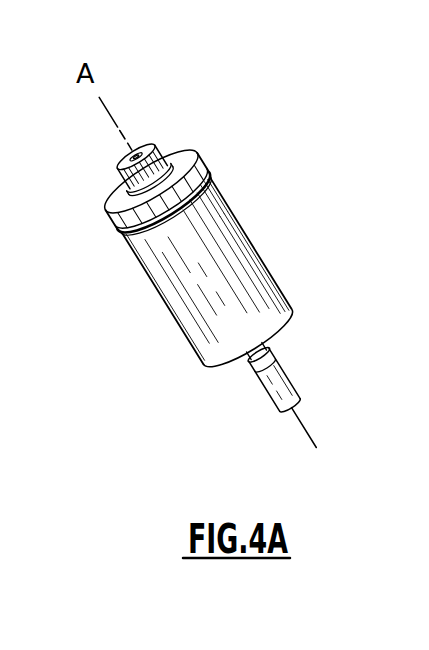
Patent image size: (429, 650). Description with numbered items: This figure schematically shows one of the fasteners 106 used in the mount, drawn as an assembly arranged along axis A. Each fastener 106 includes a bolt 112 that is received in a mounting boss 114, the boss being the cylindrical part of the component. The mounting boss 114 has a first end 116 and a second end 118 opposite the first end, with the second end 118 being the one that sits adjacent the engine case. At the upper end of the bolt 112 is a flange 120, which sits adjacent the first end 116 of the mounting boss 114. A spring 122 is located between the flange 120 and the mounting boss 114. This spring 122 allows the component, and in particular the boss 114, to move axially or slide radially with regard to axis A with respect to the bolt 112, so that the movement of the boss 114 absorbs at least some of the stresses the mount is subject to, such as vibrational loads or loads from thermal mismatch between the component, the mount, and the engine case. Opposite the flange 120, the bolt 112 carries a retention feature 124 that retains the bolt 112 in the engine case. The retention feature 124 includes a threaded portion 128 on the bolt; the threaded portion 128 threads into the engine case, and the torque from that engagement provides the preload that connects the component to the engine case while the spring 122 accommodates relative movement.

The fastener 106 is at (319, 133).
The bolt 112 is at (183, 103).
The mounting boss 114 is at (163, 306).
The first end 116 is at (237, 168).
The second end 118 is at (303, 287).
The flange 120 is at (123, 182).
The spring 122 is at (124, 230).
The retention feature 124 is at (316, 359).
The threaded portion 128 is at (268, 398).